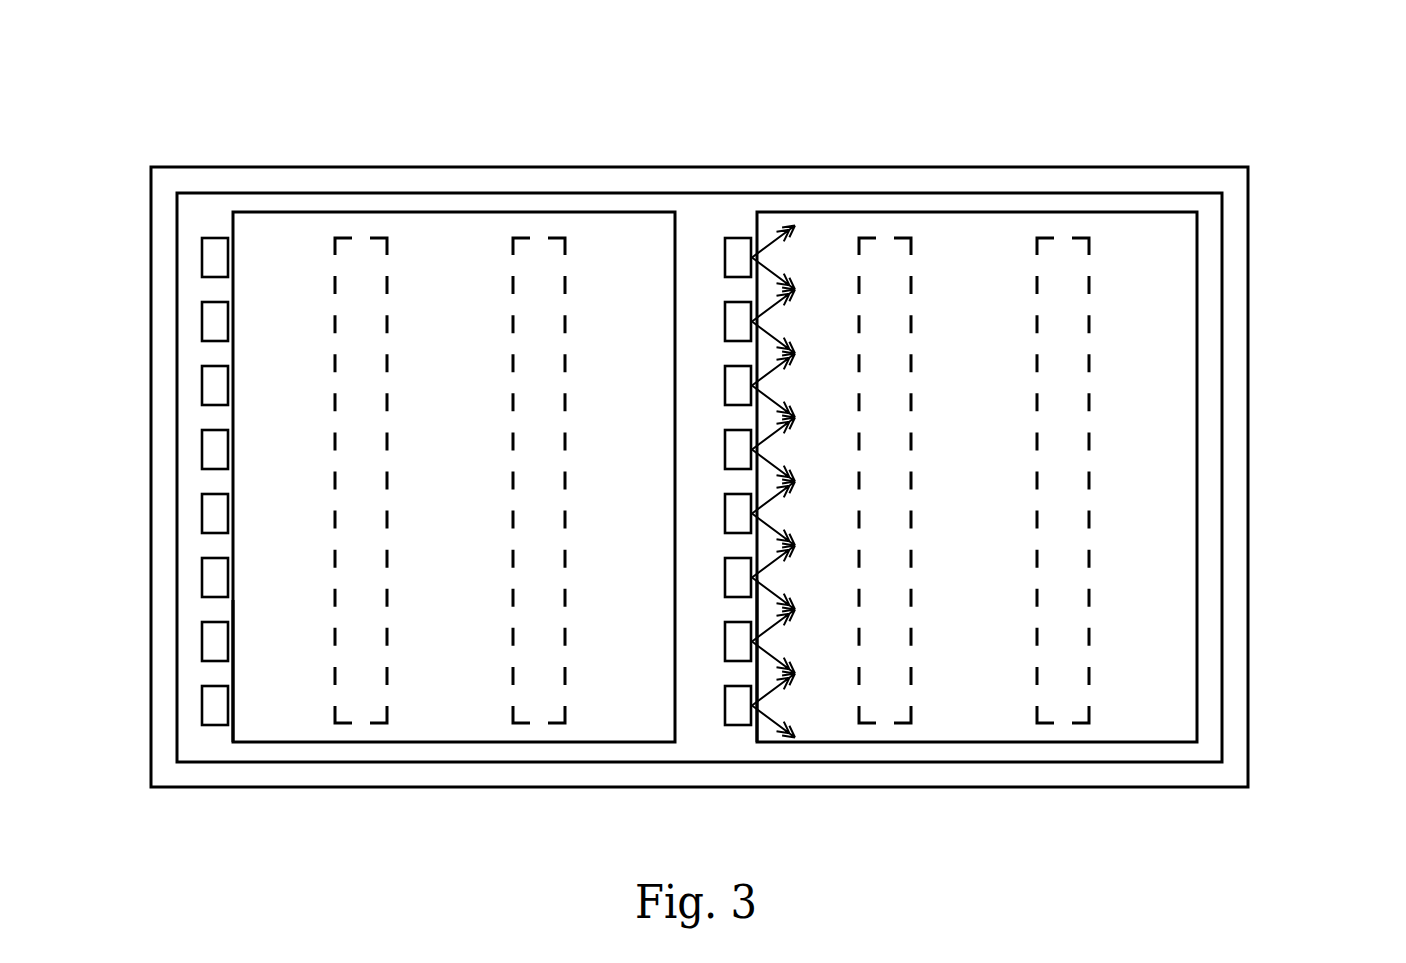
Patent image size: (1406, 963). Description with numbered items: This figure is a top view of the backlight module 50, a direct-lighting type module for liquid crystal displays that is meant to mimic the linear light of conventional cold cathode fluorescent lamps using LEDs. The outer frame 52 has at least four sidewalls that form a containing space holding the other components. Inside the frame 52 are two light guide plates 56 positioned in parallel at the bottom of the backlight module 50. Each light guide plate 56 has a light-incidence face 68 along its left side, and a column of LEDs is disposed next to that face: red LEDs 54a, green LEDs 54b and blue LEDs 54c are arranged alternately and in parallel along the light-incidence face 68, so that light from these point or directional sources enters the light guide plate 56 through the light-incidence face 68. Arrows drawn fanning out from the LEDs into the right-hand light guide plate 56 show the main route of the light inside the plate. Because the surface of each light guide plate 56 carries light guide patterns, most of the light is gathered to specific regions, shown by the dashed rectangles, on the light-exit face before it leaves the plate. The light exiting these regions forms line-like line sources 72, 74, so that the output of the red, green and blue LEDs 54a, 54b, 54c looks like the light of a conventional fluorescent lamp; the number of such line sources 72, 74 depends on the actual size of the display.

The backlight module 50 is at (1268, 115).
The frame 52 is at (1249, 457).
The red LEDs 54a is at (201, 258).
The green LEDs 54b is at (201, 322).
The blue LEDs 54c is at (201, 386).
The light guide plate 56 is at (455, 235).
The light-incidence face 68 is at (235, 665).
The line-like line source 72 is at (872, 724).
The line-like line source 74 is at (1050, 724).